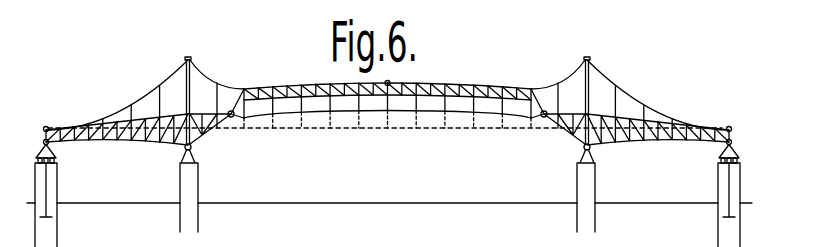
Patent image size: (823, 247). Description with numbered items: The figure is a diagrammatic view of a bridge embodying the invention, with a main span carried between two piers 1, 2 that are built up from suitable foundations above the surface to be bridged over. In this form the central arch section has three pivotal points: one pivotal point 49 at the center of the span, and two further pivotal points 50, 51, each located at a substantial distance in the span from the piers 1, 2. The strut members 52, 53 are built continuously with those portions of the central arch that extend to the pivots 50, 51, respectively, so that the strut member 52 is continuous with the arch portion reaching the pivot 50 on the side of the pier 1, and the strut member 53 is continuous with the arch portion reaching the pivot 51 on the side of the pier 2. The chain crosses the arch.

The pier 1 is at (197, 183).
The pier 2 is at (580, 180).
The pivotal point 49 is at (389, 85).
The pivotal point 50 is at (233, 111).
The pivotal point 51 is at (544, 111).
The strut member 52 is at (111, 143).
The strut member 53 is at (652, 143).